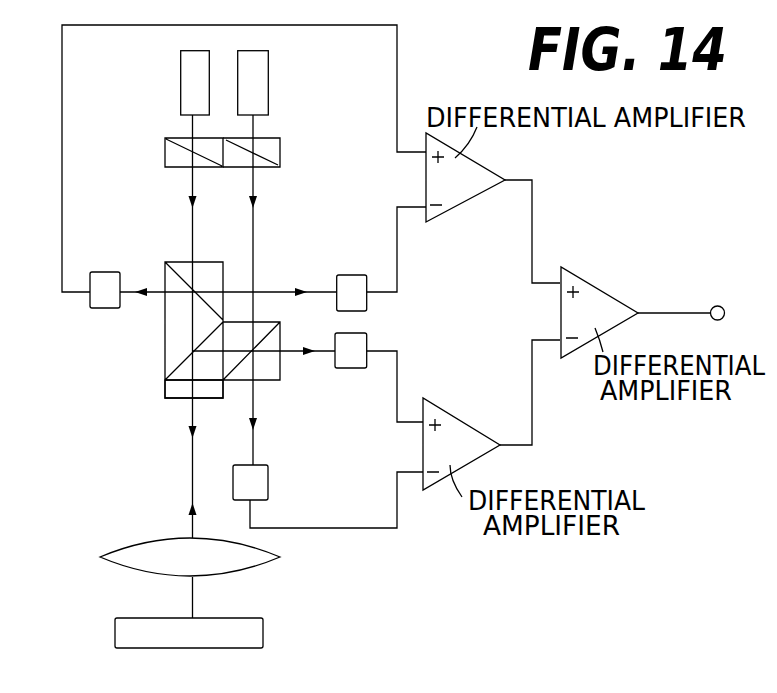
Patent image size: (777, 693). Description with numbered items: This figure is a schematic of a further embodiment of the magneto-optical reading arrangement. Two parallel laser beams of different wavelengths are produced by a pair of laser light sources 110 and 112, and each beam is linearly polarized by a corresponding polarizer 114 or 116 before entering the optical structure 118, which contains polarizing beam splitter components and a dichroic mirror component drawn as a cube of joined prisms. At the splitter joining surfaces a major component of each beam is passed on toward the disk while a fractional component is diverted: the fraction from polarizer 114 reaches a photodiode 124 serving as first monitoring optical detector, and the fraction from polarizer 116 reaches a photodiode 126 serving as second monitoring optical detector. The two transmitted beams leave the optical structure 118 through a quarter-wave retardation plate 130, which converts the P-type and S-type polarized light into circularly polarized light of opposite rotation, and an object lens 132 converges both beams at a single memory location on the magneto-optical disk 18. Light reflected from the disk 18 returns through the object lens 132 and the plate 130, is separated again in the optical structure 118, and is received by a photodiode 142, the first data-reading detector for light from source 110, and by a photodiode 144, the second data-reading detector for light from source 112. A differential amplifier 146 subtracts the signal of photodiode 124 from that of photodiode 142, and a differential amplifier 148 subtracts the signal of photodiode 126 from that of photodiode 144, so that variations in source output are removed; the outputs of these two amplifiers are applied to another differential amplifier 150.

The magneto-optical disk 18 is at (252, 635).
The laser light source 110 is at (188, 85).
The laser light source 112 is at (262, 82).
The polarizer 114 is at (177, 153).
The polarizer 116 is at (277, 152).
The optical structure 118 is at (112, 349).
The photodiode 124 is at (352, 282).
The photodiode 126 is at (258, 486).
The quarter-wave retardation plate 130 is at (177, 392).
The object lens 132 is at (127, 553).
The photodiode 142 is at (101, 282).
The photodiode 144 is at (350, 357).
The differential amplifier 146 is at (480, 177).
The differential amplifier 148 is at (458, 427).
The differential amplifier 150 is at (605, 310).